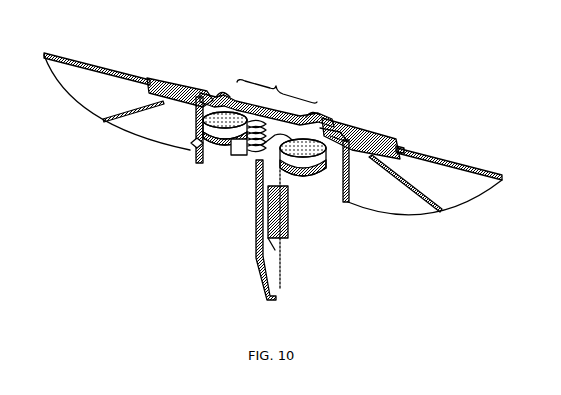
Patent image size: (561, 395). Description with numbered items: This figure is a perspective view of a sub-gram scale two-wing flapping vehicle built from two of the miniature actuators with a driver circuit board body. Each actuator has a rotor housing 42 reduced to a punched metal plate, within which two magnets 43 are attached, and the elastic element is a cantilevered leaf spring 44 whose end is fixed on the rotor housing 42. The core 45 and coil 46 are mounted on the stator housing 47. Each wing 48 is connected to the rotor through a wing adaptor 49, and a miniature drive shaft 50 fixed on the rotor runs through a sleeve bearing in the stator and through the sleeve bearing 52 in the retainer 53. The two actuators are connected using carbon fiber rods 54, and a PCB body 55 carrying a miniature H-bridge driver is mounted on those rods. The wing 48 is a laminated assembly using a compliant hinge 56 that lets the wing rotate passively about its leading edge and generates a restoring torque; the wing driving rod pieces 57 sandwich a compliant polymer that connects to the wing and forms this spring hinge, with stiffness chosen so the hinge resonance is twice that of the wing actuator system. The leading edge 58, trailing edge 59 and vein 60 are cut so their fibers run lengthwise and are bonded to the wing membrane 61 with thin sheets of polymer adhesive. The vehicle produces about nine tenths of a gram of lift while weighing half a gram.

The rotor housing 42 is at (210, 160).
The magnets 43 is at (200, 143).
The cantilevered leaf spring 44 is at (328, 185).
The core 45 is at (285, 120).
The coil 46 is at (250, 120).
The stator housing 47 is at (241, 167).
The wing 48 is at (200, 82).
The wing adaptor 49 is at (222, 97).
The miniature drive shaft 50 is at (314, 120).
The sleeve bearing 52 is at (326, 113).
The retainer 53 is at (277, 84).
The carbon fiber rods 54 is at (244, 168).
The PCB body 55 is at (275, 258).
The compliant hinge 56 is at (398, 148).
The wing driving rod pieces 57 is at (374, 132).
The leading edge 58 is at (478, 166).
The trailing edge 59 is at (347, 205).
The vein 60 is at (440, 213).
The wing membrane 61 is at (393, 206).